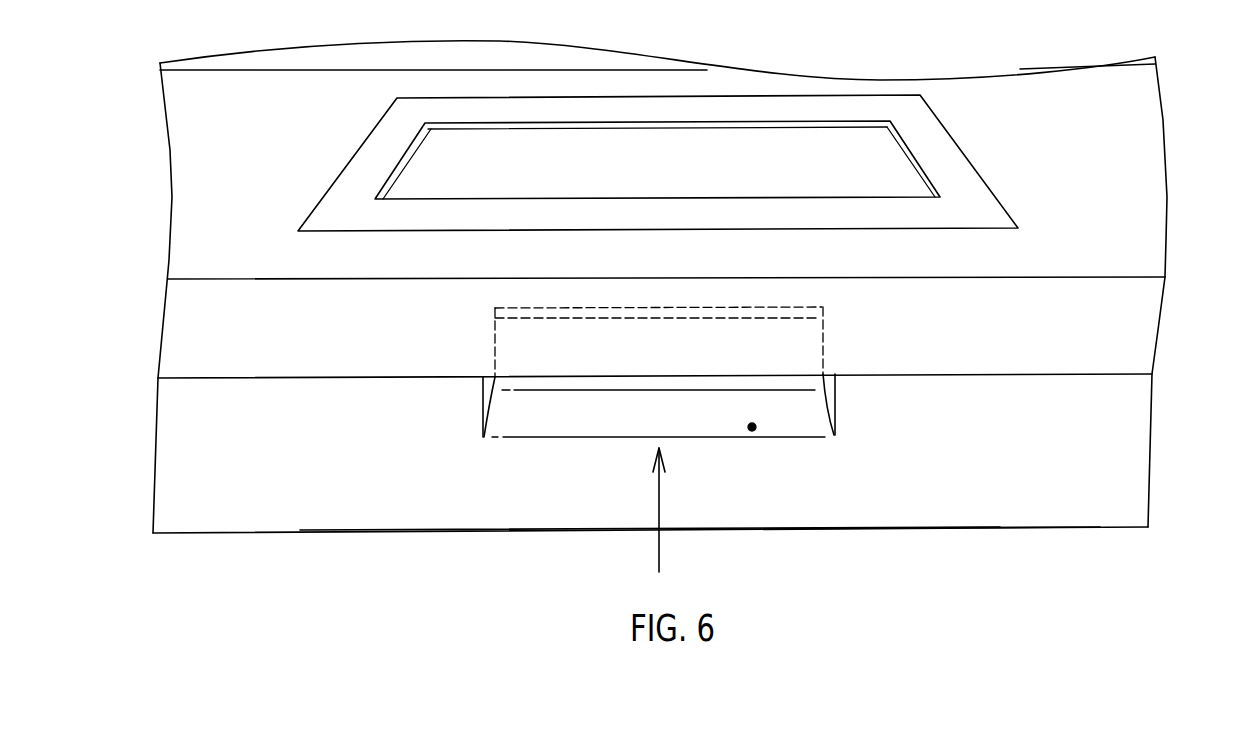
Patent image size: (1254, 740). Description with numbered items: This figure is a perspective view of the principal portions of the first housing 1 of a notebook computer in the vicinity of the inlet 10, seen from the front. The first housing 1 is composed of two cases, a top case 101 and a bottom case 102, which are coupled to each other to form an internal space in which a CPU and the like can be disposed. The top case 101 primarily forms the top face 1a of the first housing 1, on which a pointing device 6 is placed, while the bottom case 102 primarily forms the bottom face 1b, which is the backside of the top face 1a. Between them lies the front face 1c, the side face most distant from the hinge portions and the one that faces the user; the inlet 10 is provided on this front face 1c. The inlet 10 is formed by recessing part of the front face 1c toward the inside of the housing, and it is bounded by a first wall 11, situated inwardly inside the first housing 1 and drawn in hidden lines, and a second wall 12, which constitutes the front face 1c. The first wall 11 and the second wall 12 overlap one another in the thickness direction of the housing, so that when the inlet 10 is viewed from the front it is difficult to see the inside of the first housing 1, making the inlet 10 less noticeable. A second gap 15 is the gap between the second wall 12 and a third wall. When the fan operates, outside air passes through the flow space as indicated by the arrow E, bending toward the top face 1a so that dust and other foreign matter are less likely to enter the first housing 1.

The first housing 1 is at (1140, 203).
The top face 1a is at (1123, 120).
The bottom face 1b is at (957, 535).
The front face 1c is at (1110, 415).
The pointing device 6 is at (812, 138).
The inlet 10 is at (837, 415).
The first wall 11 is at (823, 333).
The second wall 12 is at (553, 333).
The second gap 15 is at (752, 431).
The top case 101 is at (1140, 323).
The bottom case 102 is at (1127, 475).
The arrow E is at (657, 562).